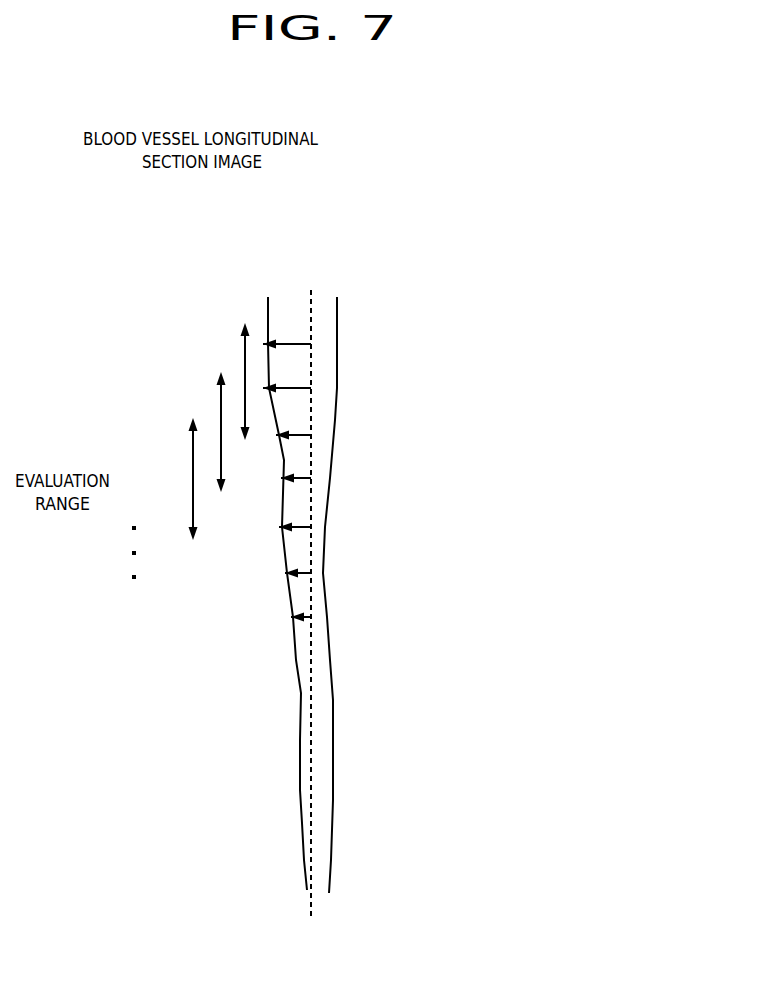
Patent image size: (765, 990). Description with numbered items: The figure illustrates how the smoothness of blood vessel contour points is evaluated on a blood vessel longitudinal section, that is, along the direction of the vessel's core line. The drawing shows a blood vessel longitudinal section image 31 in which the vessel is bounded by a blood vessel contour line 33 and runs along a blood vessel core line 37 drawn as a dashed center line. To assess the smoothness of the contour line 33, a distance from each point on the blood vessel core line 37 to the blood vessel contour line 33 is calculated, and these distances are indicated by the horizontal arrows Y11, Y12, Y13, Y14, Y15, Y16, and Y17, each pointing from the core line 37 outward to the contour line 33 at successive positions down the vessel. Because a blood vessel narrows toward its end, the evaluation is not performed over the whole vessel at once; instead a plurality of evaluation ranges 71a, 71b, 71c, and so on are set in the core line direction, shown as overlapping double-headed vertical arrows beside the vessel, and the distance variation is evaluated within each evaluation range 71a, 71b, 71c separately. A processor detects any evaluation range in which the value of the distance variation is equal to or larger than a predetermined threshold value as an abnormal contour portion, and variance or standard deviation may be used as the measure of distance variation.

The blood vessel longitudinal section image 31 is at (222, 545).
The blood vessel contour line 33 is at (300, 700).
The blood vessel core line 37 is at (313, 773).
The evaluation range 71a is at (245, 343).
The evaluation range 71b is at (221, 394).
The evaluation range 71c is at (193, 453).
The horizontal arrow Y11 is at (311, 344).
The horizontal arrow Y12 is at (311, 388).
The horizontal arrow Y13 is at (311, 435).
The horizontal arrow Y14 is at (311, 478).
The horizontal arrow Y15 is at (311, 527).
The horizontal arrow Y16 is at (311, 573).
The horizontal arrow Y17 is at (311, 617).